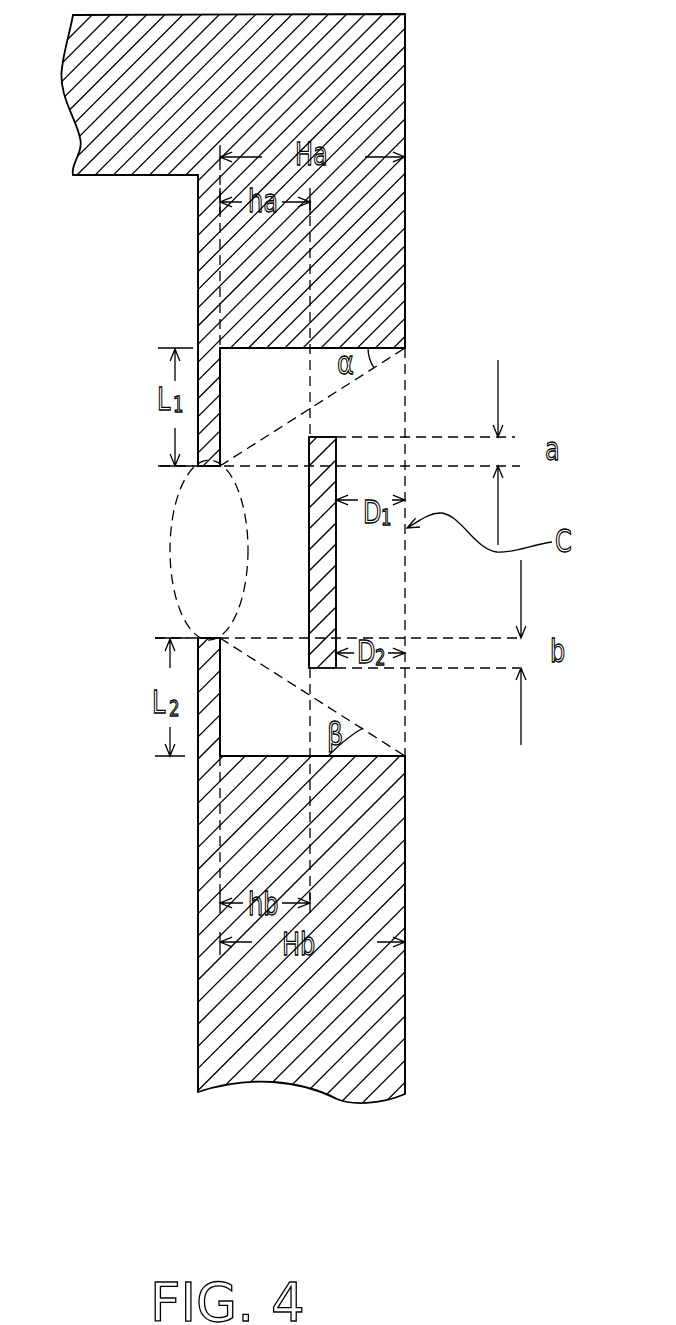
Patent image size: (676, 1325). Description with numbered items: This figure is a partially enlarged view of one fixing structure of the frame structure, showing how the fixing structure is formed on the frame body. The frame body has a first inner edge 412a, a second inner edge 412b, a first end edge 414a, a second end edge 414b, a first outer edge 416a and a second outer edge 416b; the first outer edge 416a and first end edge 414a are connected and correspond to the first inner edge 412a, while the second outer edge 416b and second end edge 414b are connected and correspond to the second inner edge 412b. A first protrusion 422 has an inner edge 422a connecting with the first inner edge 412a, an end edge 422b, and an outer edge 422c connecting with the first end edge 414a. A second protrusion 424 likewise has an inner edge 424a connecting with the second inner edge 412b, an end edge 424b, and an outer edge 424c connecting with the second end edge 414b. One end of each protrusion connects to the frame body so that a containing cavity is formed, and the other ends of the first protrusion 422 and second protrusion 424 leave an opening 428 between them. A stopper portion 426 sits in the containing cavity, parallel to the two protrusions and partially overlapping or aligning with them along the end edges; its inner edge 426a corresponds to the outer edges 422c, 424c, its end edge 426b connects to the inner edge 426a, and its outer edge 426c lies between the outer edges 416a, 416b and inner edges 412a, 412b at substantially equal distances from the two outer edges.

The first inner edge 412a is at (185, 289).
The second inner edge 412b is at (185, 813).
The first end edge 414a is at (247, 361).
The second end edge 414b is at (226, 742).
The first outer edge 416a is at (420, 273).
The second outer edge 416b is at (420, 813).
The first protrusion 422 is at (197, 347).
The inner edge of the first protrusion 422a is at (185, 425).
The end edge of the first protrusion 422b is at (216, 478).
The outer edge of the first protrusion 422c is at (270, 417).
The second protrusion 424 is at (197, 692).
The inner edge of the second protrusion 424a is at (185, 650).
The end edge of the second protrusion 424b is at (205, 625).
The outer edge of the second protrusion 424c is at (234, 665).
The stopper portion 426 is at (350, 558).
The inner edge of the stopper portion 426a is at (295, 567).
The end edge of the stopper portion 426b is at (322, 424).
The outer edge of the stopper portion 426c is at (350, 588).
The opening 428 is at (172, 513).